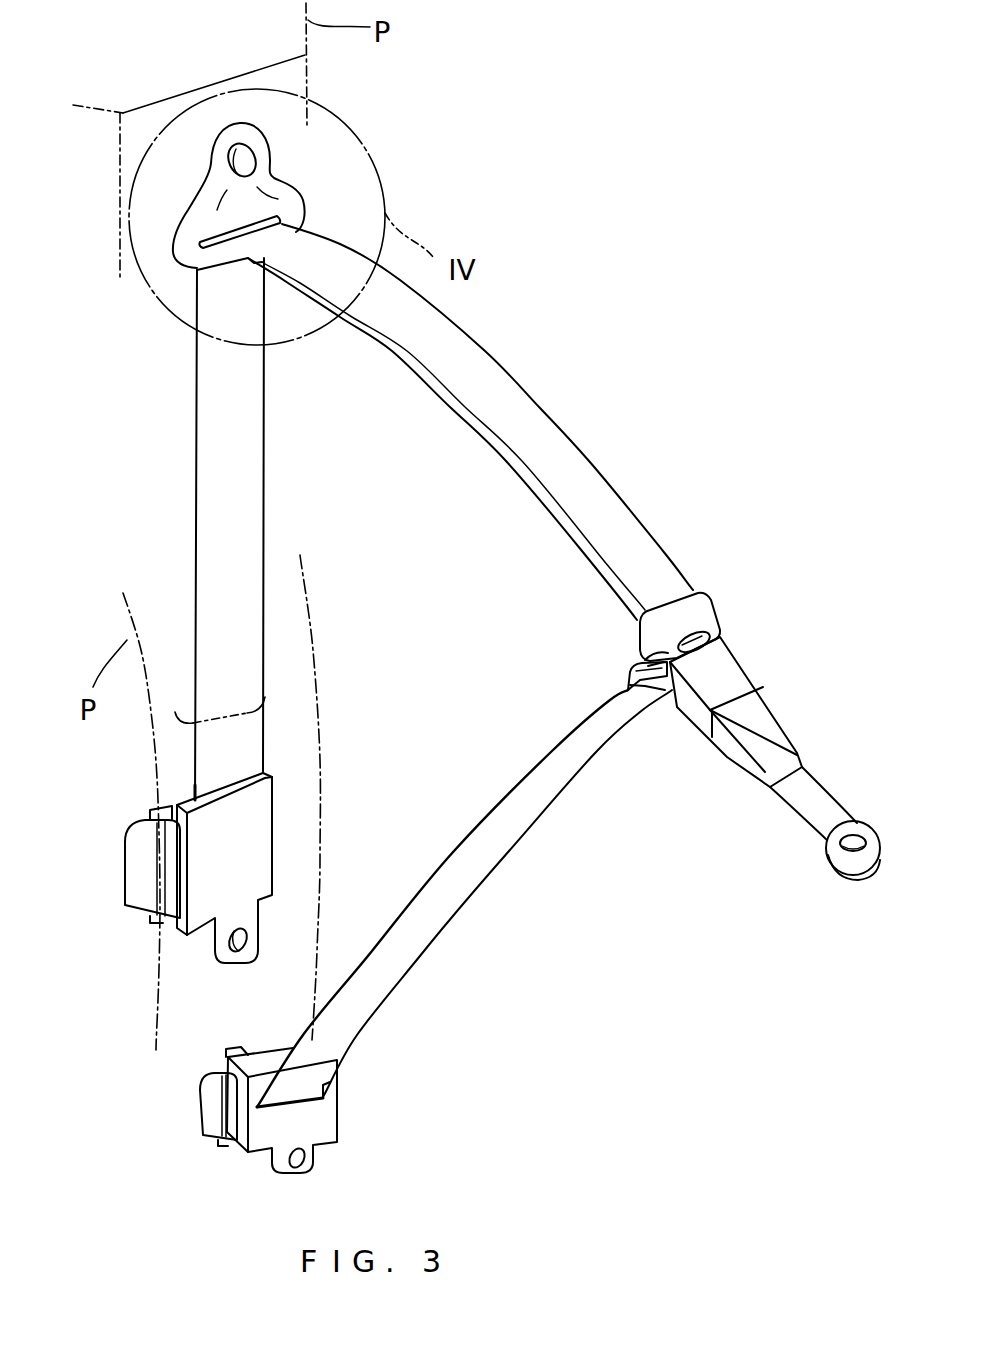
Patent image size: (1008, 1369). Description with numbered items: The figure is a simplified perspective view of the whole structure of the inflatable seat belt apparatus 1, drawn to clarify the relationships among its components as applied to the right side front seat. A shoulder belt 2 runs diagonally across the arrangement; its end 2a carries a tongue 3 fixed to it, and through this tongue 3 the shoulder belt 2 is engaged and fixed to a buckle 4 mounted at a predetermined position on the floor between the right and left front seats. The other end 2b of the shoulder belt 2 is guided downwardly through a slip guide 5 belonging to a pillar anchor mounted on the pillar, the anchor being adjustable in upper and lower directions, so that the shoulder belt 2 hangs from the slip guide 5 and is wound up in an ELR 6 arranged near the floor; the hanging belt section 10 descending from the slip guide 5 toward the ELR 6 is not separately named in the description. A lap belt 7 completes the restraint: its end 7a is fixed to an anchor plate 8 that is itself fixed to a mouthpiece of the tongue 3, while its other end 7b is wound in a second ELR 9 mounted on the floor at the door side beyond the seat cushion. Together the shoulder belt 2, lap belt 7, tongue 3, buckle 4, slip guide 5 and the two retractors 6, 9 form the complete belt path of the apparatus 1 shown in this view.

The inflatable seat belt apparatus 1 is at (565, 330).
The shoulder belt 2 is at (597, 473).
The end of shoulder belt 2a is at (700, 578).
The other end of shoulder belt 2b is at (194, 795).
The tongue 3 is at (640, 648).
The buckle 4 is at (753, 657).
The slip guide 5 is at (293, 182).
The ELR 6 is at (272, 840).
The lap belt 7 is at (488, 880).
The end of lap belt 7a is at (663, 693).
The other end of lap belt 7b is at (343, 1067).
The anchor plate 8 is at (628, 667).
The ELR 9 is at (333, 1117).
The webbing strap 10 is at (264, 517).